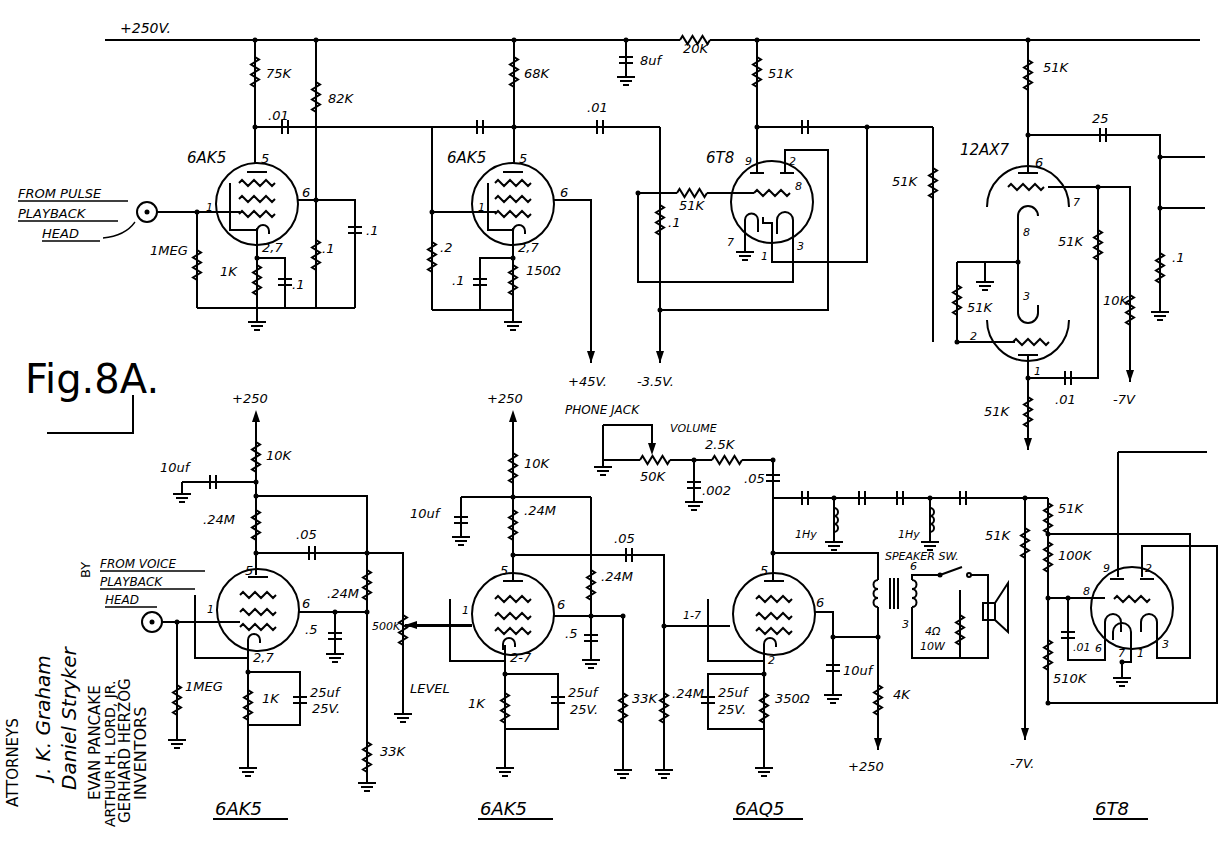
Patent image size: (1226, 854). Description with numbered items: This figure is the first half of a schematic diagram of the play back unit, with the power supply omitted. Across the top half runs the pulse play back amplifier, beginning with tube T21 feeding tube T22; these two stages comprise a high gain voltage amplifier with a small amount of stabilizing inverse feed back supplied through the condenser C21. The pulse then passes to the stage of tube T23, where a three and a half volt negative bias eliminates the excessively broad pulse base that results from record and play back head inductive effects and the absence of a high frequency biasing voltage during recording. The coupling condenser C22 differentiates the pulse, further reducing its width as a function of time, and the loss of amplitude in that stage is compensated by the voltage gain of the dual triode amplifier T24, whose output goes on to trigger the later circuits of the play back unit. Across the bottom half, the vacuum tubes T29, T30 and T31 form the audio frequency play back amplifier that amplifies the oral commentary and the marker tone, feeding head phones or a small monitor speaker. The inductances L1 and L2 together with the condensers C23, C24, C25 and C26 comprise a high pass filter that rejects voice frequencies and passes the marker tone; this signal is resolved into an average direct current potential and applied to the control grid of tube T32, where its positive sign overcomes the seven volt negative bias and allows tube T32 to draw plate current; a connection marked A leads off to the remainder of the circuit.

The tube T21 is at (222, 189).
The tube T22 is at (496, 204).
The tube T23 is at (740, 189).
The dual triode amplifier T24 is at (1011, 263).
The vacuum tube T29 is at (283, 580).
The vacuum tube T30 is at (536, 581).
The vacuum tube T31 is at (799, 580).
The tube T32 is at (1135, 580).
The condenser C21 is at (459, 116).
The coupling condenser C22 is at (817, 122).
The condenser C23 is at (806, 480).
The condenser C24 is at (861, 480).
The condenser C25 is at (900, 480).
The condenser C26 is at (964, 480).
The inductance L1 is at (845, 520).
The inductance L2 is at (941, 520).
The terminal A is at (1120, 482).